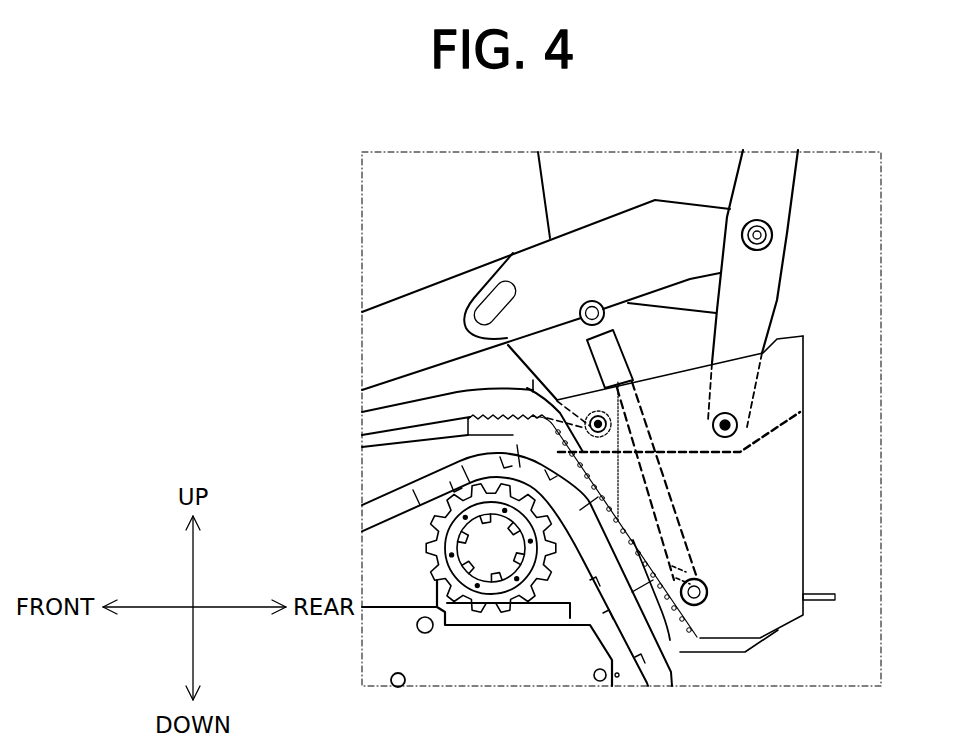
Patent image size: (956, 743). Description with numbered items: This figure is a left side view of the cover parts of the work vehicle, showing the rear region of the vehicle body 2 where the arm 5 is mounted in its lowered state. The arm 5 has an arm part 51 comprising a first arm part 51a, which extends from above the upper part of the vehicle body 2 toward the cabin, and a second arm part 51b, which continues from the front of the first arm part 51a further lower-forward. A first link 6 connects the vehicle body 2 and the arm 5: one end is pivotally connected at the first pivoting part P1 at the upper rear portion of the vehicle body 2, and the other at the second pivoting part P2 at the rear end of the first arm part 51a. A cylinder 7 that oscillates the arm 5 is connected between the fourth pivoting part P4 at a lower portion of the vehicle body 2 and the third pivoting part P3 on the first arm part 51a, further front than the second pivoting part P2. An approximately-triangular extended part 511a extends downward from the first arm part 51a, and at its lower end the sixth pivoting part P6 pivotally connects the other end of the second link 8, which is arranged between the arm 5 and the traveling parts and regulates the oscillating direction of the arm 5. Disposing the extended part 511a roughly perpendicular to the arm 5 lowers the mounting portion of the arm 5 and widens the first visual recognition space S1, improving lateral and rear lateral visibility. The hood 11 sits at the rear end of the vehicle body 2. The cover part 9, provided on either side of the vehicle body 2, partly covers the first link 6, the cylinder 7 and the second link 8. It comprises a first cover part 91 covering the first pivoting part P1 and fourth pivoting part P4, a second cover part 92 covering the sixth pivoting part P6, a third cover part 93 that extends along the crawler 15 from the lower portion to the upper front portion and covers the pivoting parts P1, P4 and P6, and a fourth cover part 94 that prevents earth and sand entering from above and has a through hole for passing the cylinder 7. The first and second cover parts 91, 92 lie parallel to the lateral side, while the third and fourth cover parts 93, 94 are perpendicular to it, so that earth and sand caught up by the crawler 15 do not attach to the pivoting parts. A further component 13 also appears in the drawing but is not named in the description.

The vehicle body 2 is at (843, 365).
The arm 5 is at (437, 198).
The arm part 51 is at (392, 262).
The first arm part 51a is at (545, 255).
The second arm part 51b is at (367, 332).
The extended part 511a is at (545, 360).
The first link 6 is at (772, 303).
The cylinder 7 is at (677, 502).
The second link 8 is at (437, 395).
The cover part 9 is at (815, 400).
The first cover part 91 is at (765, 525).
The second cover part 92 is at (610, 472).
The third cover part 93 is at (663, 550).
The fourth cover part 94 is at (770, 440).
The hood 11 is at (663, 303).
The sprocket 13 is at (423, 557).
The crawler 15 is at (685, 672).
The first pivoting part P1 is at (737, 435).
The second pivoting part P2 is at (772, 233).
The third pivoting part P3 is at (596, 302).
The fourth pivoting part P4 is at (710, 590).
The sixth pivoting part P6 is at (626, 391).
The first visual recognition space S1 is at (665, 322).